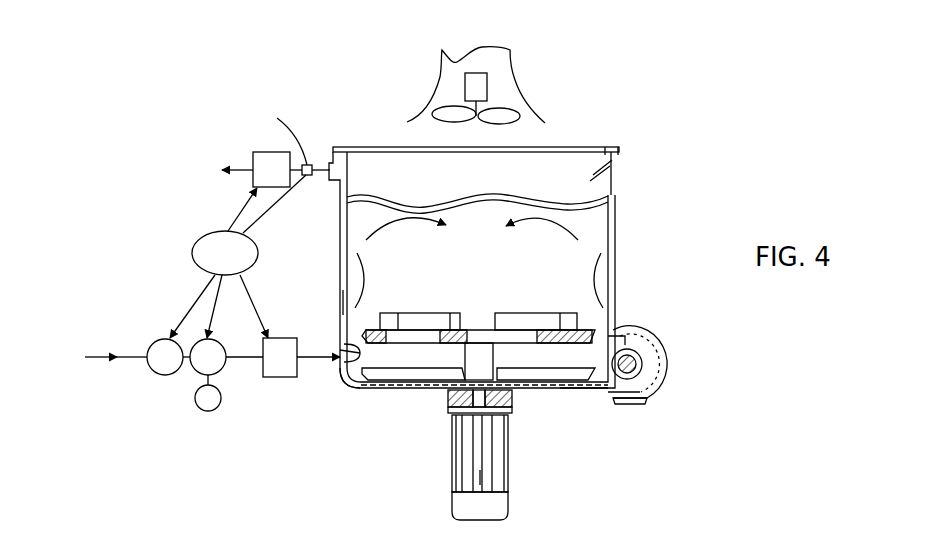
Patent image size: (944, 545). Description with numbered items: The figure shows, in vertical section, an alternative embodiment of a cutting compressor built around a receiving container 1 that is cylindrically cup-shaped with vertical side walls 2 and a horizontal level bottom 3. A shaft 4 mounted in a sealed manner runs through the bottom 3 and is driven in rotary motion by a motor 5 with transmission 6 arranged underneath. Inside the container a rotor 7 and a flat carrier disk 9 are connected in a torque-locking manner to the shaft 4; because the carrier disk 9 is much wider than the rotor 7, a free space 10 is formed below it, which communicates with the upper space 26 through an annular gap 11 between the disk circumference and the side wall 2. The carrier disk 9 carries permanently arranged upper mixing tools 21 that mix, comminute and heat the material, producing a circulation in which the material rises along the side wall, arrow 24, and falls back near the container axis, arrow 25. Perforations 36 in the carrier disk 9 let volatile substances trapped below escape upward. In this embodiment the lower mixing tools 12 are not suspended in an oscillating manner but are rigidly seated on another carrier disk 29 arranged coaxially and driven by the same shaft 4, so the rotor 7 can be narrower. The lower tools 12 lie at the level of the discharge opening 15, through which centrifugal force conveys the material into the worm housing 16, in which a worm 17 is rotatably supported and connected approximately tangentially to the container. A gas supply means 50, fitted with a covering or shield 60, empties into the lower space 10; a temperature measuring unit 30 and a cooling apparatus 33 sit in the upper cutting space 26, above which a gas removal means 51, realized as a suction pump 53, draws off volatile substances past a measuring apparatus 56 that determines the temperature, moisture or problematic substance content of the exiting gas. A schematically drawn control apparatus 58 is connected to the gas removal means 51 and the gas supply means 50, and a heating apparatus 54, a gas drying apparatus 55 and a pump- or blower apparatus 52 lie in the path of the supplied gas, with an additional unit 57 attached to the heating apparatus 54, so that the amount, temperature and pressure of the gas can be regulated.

The receiving container 1 is at (323, 237).
The side wall 2 is at (616, 240).
The bottom 3 is at (560, 392).
The shaft 4 is at (448, 407).
The motor 5 is at (480, 477).
The transmission 6 is at (510, 437).
The rotor 7 is at (483, 358).
The carrier disk 9 is at (508, 310).
The free space 10 is at (598, 393).
The annular gap 11 is at (600, 340).
The lower mixing tools 12 is at (556, 374).
The discharge opening 15 is at (640, 400).
The worm housing 16 is at (668, 357).
The worm 17 is at (660, 360).
The upper mixing tools 21 is at (417, 322).
The arrow 24 is at (354, 298).
The arrow 25 is at (472, 236).
The space 26 is at (491, 257).
The carrier disk 29 is at (362, 388).
The temperature measuring unit 30 is at (344, 303).
The cooling apparatus 33 is at (615, 158).
The perforations 36 is at (455, 340).
The gas supply means 50 is at (341, 353).
The gas removal means 51 is at (503, 116).
The pump- or blower apparatus 52 is at (280, 357).
The suction pump 53 is at (256, 169).
The heating apparatus 54 is at (223, 357).
The gas drying apparatus 55 is at (134, 357).
The measuring apparatus 56 is at (282, 130).
The additive reservoir 57 is at (208, 393).
The control apparatus 58 is at (238, 256).
The covering or shield 60 is at (361, 355).